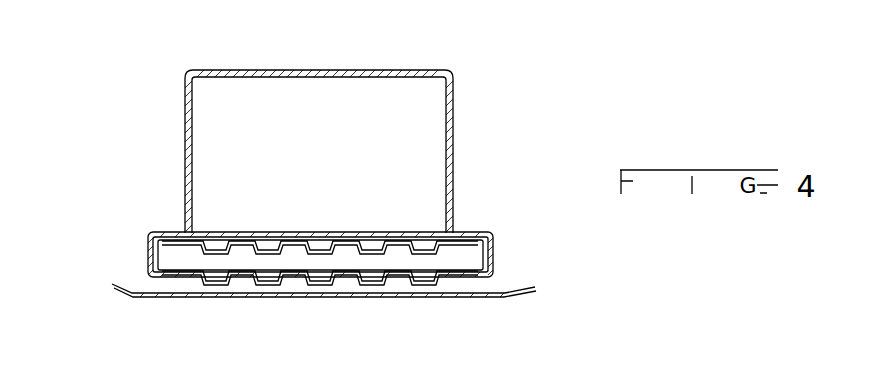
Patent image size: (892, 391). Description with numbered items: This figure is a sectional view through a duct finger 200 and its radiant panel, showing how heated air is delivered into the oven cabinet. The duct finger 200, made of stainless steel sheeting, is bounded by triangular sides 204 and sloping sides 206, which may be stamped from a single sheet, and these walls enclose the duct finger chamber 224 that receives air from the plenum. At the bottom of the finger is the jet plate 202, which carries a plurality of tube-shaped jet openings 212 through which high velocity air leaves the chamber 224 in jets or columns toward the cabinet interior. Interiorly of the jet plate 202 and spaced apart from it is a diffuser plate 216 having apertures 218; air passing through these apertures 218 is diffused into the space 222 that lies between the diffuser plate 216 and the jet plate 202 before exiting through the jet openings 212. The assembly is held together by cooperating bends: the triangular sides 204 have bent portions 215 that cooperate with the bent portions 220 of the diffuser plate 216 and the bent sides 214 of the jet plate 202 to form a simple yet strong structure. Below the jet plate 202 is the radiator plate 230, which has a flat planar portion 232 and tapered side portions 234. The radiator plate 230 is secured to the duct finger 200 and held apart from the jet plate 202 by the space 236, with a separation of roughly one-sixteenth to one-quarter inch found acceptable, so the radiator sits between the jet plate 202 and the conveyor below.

The duct finger 200 is at (177, 150).
The jet plate 202 is at (456, 282).
The triangular sides 204 is at (184, 103).
The sloping sides 206 is at (338, 69).
The jet openings 212 is at (358, 287).
The bent sides of jet plate 214 is at (150, 240).
The bent portions of triangular sides 215 is at (155, 263).
The diffuser plate 216 is at (241, 241).
The apertures of diffuser plate 218 is at (321, 241).
The bent portions of diffuser plate 220 is at (220, 240).
The space between diffuser plate and jet plate 222 is at (368, 262).
The duct finger chamber 224 is at (345, 115).
The radiator plate 230 is at (191, 305).
The planar portion of radiator plate 232 is at (390, 300).
The tapered side portions 234 is at (123, 296).
The space between radiator and jet plate 236 is at (498, 287).